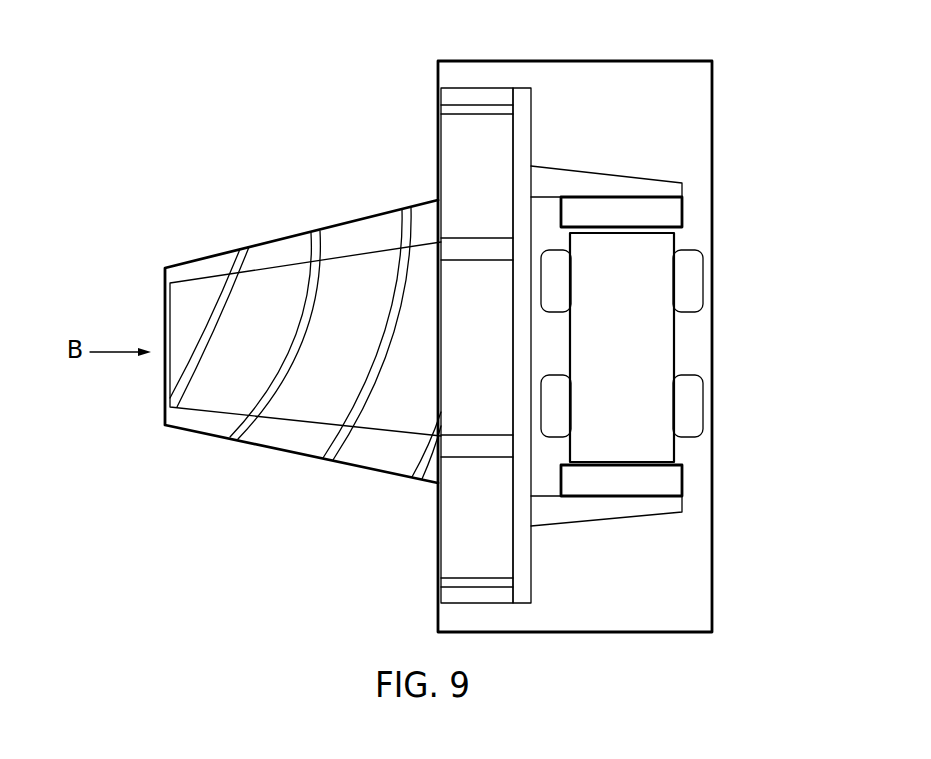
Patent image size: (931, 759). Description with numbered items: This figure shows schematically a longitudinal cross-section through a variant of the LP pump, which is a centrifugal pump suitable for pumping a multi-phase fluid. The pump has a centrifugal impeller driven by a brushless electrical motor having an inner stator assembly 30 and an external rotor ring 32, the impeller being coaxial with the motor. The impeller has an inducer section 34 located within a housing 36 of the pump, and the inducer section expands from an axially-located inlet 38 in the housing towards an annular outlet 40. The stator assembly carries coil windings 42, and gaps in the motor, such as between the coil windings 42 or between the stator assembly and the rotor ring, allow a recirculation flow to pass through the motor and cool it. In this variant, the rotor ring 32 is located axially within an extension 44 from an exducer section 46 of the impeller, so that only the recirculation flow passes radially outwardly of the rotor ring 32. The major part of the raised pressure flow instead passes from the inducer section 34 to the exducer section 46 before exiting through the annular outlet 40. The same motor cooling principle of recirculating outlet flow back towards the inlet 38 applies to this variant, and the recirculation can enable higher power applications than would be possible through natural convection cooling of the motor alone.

The inner stator assembly 30 is at (640, 287).
The external rotor ring 32 is at (668, 213).
The inducer section 34 is at (333, 451).
The housing 36 is at (435, 613).
The inlet 38 is at (181, 275).
The annular outlet 40 is at (476, 74).
The coil windings 42 is at (688, 295).
The extension 44 is at (617, 509).
The exducer section 46 is at (453, 522).